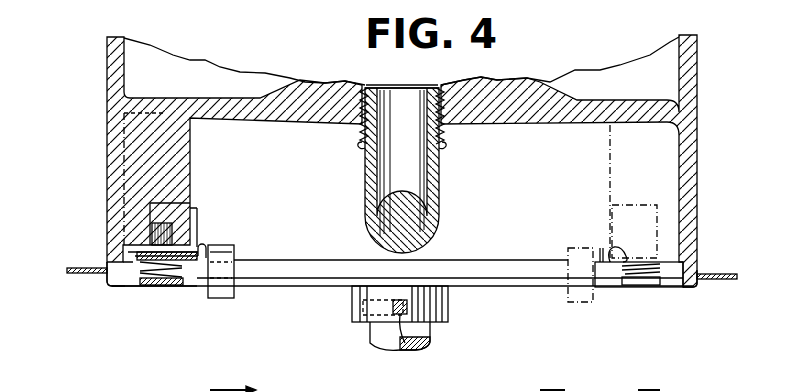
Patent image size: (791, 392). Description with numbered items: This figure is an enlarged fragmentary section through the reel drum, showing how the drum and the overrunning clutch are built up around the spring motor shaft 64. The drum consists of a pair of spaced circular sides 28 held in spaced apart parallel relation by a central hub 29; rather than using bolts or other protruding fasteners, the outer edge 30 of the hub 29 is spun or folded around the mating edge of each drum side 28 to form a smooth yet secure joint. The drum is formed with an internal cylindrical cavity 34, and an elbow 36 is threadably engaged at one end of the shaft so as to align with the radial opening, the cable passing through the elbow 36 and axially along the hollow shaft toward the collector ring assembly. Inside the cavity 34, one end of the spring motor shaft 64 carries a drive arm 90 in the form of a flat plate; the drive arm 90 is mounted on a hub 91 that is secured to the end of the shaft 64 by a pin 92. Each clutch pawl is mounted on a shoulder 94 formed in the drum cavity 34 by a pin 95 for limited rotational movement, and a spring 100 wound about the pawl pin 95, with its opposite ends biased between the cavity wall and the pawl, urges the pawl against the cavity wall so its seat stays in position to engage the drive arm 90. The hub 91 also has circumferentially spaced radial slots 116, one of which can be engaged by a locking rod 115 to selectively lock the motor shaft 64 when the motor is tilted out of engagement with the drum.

The internal cylindrical cavity 34 is at (121, 153).
The central hub 29 is at (577, 100).
The elbow 36 is at (441, 224).
The shoulder 94 is at (128, 254).
The spring 100 is at (176, 267).
The pin 95 is at (160, 280).
The drive arm 90 is at (265, 280).
The hub 91 is at (360, 304).
The pin 92 is at (455, 303).
The rod 115 is at (400, 316).
The radial slots 116 is at (405, 324).
The spring motor shaft 64 is at (372, 343).
The circular sides 28 is at (80, 274).
The outer edge 30 is at (110, 292).